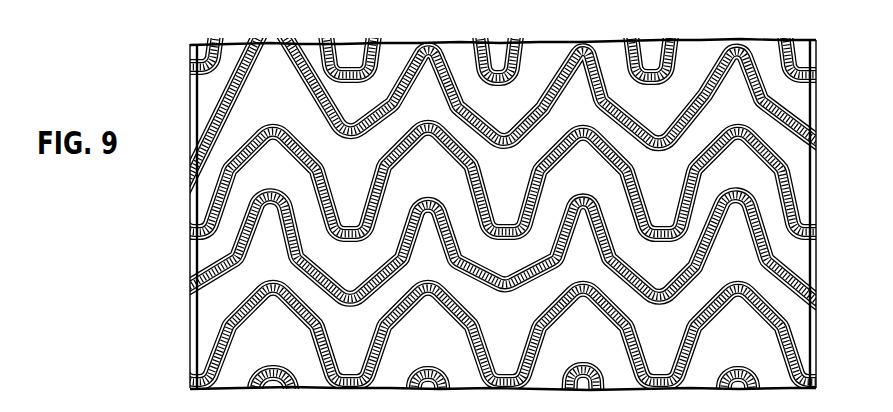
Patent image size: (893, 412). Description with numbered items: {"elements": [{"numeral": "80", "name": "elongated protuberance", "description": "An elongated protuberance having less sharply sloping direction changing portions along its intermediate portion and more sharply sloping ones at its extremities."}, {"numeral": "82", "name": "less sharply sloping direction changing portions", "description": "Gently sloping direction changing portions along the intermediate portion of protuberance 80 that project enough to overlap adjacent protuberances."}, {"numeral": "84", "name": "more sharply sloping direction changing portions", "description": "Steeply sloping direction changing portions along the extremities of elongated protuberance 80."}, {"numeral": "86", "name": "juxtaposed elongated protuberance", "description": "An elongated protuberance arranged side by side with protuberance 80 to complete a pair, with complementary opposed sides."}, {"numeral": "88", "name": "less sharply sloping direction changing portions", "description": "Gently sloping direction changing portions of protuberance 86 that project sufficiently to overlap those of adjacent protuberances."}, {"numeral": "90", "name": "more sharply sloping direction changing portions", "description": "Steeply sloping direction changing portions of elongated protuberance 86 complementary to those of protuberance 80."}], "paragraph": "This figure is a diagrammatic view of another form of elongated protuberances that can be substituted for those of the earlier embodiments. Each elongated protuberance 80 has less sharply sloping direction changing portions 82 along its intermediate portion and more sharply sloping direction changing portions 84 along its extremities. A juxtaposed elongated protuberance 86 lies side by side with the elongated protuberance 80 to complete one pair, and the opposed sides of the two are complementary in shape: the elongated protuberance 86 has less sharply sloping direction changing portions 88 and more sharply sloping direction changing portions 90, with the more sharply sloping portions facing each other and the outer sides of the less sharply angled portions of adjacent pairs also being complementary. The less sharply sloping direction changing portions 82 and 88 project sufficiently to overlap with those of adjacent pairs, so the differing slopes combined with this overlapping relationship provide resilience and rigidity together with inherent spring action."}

The filter element 80 is at (486, 214).
The pleats 82 is at (744, 336).
The outer layer 84 is at (502, 200).
The intermediate layer 86 is at (500, 216).
The inner layer 88 is at (498, 216).
The channels 90 is at (665, 351).